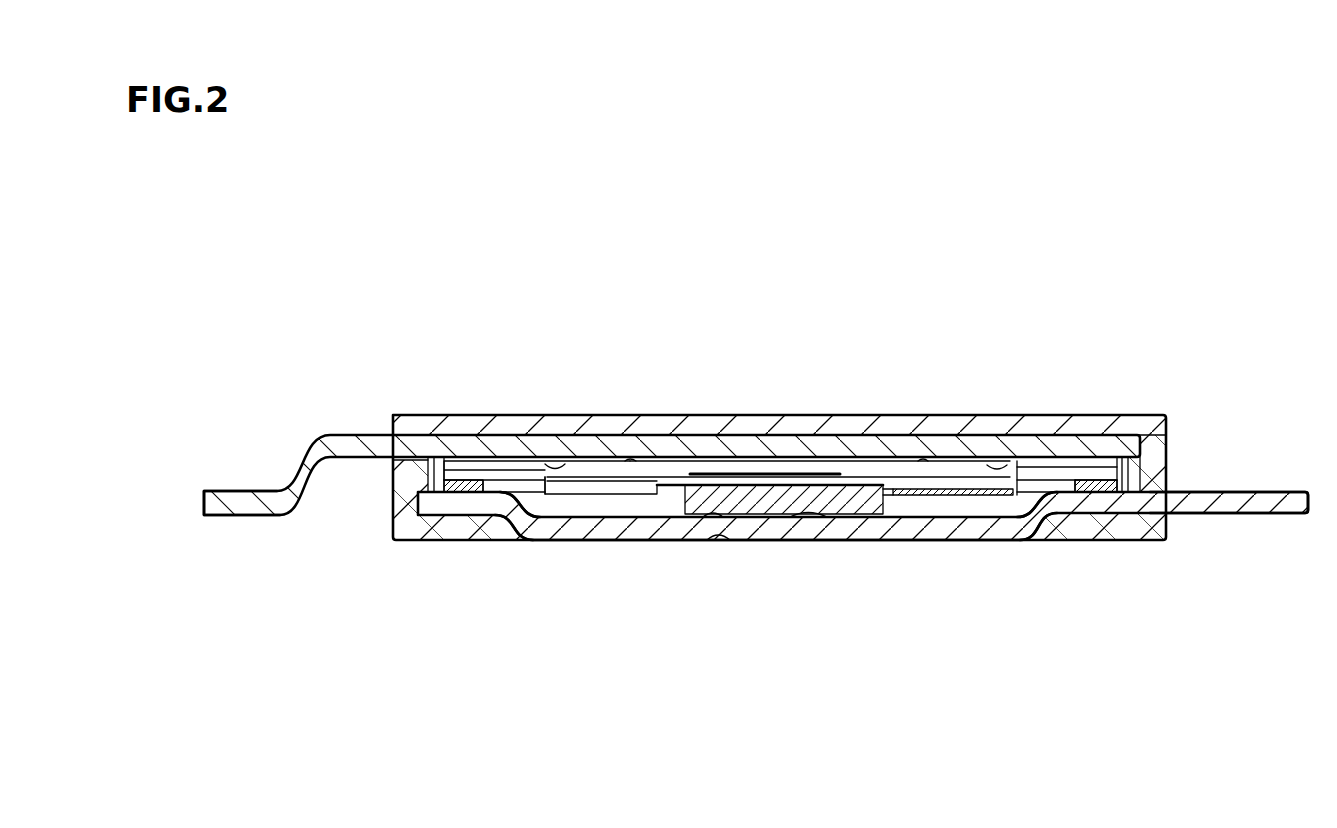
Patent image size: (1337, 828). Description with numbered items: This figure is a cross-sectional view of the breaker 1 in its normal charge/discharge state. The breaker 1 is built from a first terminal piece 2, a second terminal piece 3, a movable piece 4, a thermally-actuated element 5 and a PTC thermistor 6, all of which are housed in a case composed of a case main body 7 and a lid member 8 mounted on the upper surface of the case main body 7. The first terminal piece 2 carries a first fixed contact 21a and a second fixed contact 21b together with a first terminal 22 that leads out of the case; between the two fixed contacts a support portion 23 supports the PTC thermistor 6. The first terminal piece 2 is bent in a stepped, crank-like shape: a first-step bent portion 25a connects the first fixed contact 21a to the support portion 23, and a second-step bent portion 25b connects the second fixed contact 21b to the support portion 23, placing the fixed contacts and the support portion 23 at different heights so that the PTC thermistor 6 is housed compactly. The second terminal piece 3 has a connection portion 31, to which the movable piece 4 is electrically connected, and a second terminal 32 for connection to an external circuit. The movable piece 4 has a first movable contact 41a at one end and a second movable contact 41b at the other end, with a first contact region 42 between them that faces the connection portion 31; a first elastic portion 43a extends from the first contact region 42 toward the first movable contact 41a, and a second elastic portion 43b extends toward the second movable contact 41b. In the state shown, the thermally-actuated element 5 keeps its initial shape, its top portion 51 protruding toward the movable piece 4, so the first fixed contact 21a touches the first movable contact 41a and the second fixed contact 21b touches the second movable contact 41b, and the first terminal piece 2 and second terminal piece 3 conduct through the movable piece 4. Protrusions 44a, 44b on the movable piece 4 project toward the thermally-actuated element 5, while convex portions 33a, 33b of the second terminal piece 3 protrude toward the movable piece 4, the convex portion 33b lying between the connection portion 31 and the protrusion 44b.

The breaker 1 is at (1237, 263).
The first terminal piece 2 is at (863, 505).
The second terminal piece 3 is at (672, 464).
The movable piece 4 is at (900, 466).
The thermally-actuated element 5 is at (635, 493).
The PTC thermistor 6 is at (870, 493).
The case main body 7 is at (403, 498).
The lid member 8 is at (697, 425).
The first fixed contact 21a is at (434, 458).
The second fixed contact 21b is at (1120, 458).
The first terminal 22 is at (1255, 503).
The support portion 23 is at (762, 518).
The first-step bent portion 25a is at (528, 523).
The second-step bent portion 25b is at (1040, 517).
The connection portion 31 is at (773, 472).
The second terminal 32 is at (242, 503).
The convex portion 33a is at (630, 461).
The convex portion 33b is at (922, 447).
The first movable contact 41a is at (465, 485).
The second movable contact 41b is at (1100, 492).
The first contact region 42 is at (790, 468).
The first elastic portion 43a is at (592, 464).
The second elastic portion 43b is at (965, 465).
The protrusion 44a is at (553, 478).
The protrusion 44b is at (1000, 478).
The top portion 51 is at (797, 508).